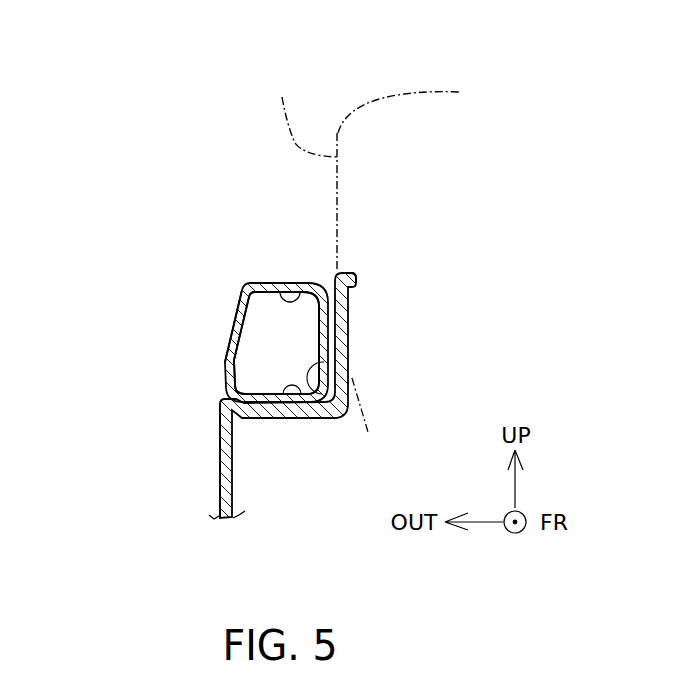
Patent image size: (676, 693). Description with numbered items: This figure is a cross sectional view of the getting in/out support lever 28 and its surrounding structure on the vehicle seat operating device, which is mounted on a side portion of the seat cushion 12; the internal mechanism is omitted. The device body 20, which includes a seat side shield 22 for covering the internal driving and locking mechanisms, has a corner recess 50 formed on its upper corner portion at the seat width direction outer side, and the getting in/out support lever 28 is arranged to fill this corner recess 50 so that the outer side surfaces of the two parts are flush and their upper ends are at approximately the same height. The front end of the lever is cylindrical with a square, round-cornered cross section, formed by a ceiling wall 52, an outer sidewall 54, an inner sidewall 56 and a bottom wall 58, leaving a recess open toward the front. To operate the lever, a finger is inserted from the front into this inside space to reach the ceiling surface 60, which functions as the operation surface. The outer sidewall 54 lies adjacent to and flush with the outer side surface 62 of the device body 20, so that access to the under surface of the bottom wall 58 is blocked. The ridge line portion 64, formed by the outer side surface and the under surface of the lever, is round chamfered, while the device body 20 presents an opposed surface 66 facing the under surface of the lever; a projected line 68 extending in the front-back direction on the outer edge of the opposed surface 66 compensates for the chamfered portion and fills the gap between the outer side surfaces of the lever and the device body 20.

The seat cushion 12 is at (282, 97).
The device body 20 is at (322, 263).
The seat side shield 22 is at (218, 493).
The getting in/out support lever 28 is at (213, 277).
The corner recess 50 is at (350, 363).
The ceiling wall 52 is at (270, 277).
The outer sidewall 54 is at (235, 327).
The inner sidewall 56 is at (350, 295).
The bottom wall 58 is at (268, 393).
The ceiling surface 60 is at (287, 288).
The outer side surface 62 is at (218, 455).
The ridge line portion 64 is at (228, 389).
The opposed surface 66 is at (297, 405).
The projected line 68 is at (218, 403).